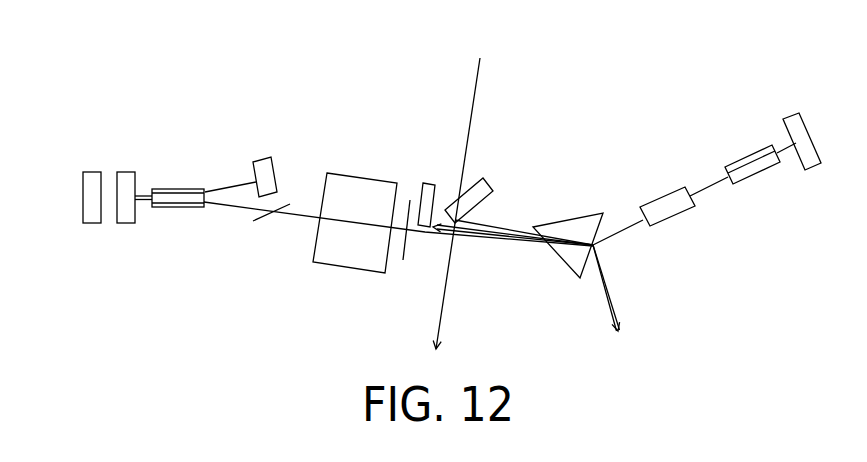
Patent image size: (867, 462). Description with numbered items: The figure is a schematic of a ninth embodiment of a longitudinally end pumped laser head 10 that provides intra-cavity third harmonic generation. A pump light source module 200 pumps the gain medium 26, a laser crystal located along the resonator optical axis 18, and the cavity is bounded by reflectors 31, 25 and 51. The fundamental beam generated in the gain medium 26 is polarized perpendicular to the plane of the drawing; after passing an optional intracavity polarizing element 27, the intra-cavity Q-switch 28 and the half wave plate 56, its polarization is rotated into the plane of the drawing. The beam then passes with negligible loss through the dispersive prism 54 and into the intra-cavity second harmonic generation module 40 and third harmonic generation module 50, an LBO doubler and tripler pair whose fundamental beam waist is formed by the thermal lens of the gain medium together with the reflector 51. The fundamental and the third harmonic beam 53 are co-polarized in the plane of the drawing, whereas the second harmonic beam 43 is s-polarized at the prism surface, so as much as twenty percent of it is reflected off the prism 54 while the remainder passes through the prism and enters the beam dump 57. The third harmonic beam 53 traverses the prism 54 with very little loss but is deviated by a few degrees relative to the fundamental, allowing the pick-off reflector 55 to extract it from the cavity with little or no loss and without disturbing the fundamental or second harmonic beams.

The laser head 10 is at (481, 50).
The resonator optical axis 18 is at (398, 262).
The first reflector 25 is at (107, 238).
The gain medium 26 is at (218, 234).
The intracavity polarizing element 27 is at (258, 147).
The Q-switch 28 is at (354, 194).
The second reflector 31 is at (217, 147).
The second harmonic generation module 40 is at (732, 147).
The second harmonic beam 43 is at (480, 58).
The third harmonic generation module 50 is at (642, 196).
The reflector 51 is at (760, 105).
The third harmonic beam 53 is at (481, 363).
The dispersive prism 54 is at (518, 280).
The pick-off reflector 55 is at (519, 161).
The half wave plate 56 is at (369, 170).
The beam dump 57 is at (401, 139).
The pump light source module 200 is at (60, 219).